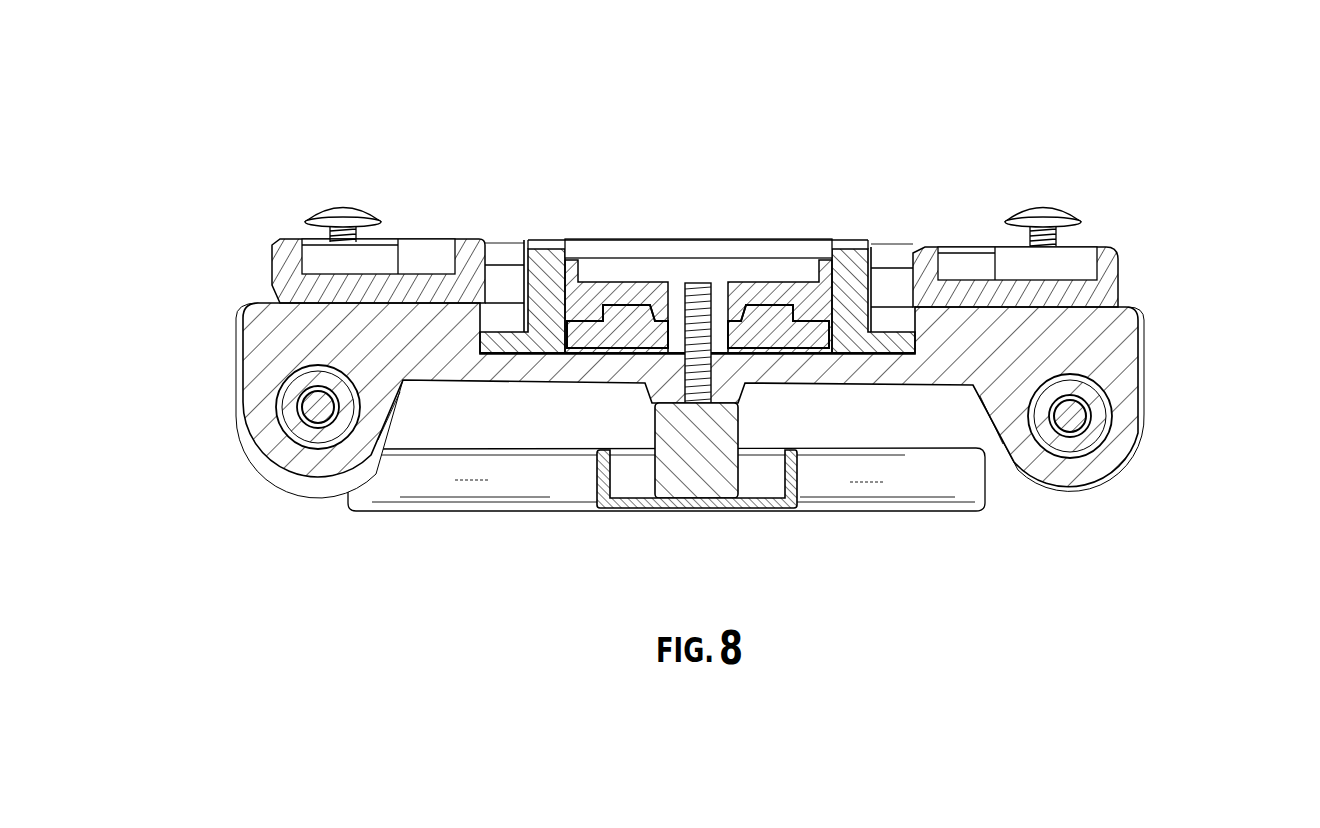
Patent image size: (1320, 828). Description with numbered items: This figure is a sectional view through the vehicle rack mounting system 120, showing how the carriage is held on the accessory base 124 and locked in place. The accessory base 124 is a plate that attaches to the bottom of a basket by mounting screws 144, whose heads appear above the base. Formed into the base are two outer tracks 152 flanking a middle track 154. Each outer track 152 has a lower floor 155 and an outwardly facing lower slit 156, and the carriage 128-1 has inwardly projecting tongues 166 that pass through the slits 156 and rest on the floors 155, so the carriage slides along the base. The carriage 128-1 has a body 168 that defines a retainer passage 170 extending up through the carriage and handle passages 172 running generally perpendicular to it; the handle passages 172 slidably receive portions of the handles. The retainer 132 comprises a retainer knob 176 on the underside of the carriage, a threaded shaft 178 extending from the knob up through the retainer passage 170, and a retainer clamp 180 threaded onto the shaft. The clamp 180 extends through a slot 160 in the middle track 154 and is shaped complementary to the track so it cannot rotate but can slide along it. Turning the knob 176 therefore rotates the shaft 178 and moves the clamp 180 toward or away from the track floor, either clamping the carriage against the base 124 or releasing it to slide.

The vehicle rack mounting system 120 is at (192, 262).
The accessory base 124 is at (1123, 262).
The carriage 128-1 is at (1136, 338).
The retainer 132 is at (798, 498).
The mounting screw 144 is at (345, 210).
The outer track 152 is at (500, 245).
The middle track 154 is at (587, 275).
The lower floor 155 is at (494, 353).
The lower slit 156 is at (497, 264).
The slot 160 is at (668, 345).
The tongue 166 is at (540, 268).
The body 168 is at (1137, 310).
The retainer passage 170 is at (690, 356).
The handle passage 172 is at (272, 400).
The retainer knob 176 is at (793, 477).
The threaded shaft 178 is at (702, 285).
The retainer clamp 180 is at (655, 300).